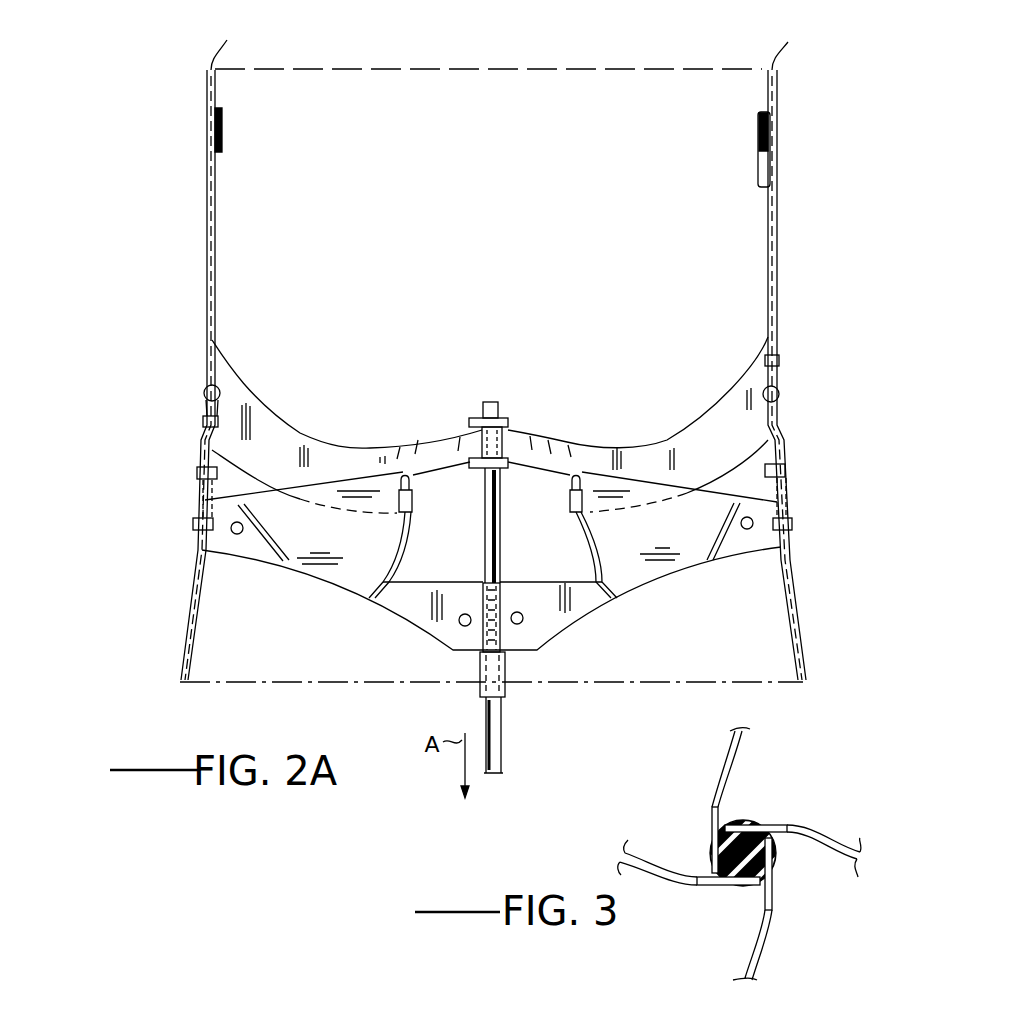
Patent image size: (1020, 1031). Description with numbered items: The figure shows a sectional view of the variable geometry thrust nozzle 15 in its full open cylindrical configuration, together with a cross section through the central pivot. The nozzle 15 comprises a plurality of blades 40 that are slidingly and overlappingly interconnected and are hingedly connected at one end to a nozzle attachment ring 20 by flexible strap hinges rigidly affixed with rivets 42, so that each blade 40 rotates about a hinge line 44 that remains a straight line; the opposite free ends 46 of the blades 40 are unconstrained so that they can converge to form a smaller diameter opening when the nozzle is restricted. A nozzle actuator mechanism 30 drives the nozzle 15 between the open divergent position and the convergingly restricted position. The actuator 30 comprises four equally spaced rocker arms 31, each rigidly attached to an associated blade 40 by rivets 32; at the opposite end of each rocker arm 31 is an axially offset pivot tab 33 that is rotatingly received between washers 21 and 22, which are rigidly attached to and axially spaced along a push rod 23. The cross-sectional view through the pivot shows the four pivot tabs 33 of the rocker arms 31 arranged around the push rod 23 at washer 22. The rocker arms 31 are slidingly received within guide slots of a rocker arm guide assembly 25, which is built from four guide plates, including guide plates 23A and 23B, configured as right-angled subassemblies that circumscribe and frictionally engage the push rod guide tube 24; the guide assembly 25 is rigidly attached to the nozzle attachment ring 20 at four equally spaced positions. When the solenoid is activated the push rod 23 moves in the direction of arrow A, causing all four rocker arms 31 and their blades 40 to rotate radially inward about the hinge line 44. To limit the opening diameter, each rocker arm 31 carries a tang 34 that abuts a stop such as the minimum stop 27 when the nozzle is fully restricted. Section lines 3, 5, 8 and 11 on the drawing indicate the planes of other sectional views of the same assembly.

In FIG. 2A, the nozzle 15 is at (190, 203).
In FIG. 2A, the nozzle attachment ring 20 is at (803, 623).
In FIG. 2A, the washer 21 is at (506, 420).
In FIG. 2A, the washer 22 is at (507, 478).
In FIG. 3, the washer 22 is at (745, 818).
In FIG. 2A, the push rod 23 is at (502, 745).
In FIG. 2A, the guide plate 23A is at (320, 562).
In FIG. 2A, the guide plate 23B is at (690, 495).
In FIG. 2A, the push rod guide tube 24 is at (506, 685).
In FIG. 2A, the rocker arm guide assembly 25 is at (360, 608).
In FIG. 2A, the minimum stop 27 is at (398, 570).
In FIG. 2A, the nozzle actuator mechanism 30 is at (490, 396).
In FIG. 2A, the rocker arm 31 is at (340, 440).
In FIG. 3, the rocker arm 31 is at (750, 735).
In FIG. 2A, the rivet 32 is at (205, 418).
In FIG. 2A, the pivot tab 33 is at (513, 425).
In FIG. 3, the pivot tab 33 is at (710, 855).
In FIG. 2A, the tang 34 is at (413, 503).
In FIG. 2A, the blade 40 is at (207, 180).
In FIG. 2A, the rivet 42 is at (203, 466).
In FIG. 2A, the hinge line 44 is at (203, 492).
In FIG. 2A, the free end 46 is at (507, 36).
In FIG. 2A, the section line 3 is at (435, 423).
In FIG. 2A, the section line 5 is at (152, 231).
In FIG. 2A, the section line 8 is at (527, 640).
In FIG. 2A, the section line 11 is at (165, 498).